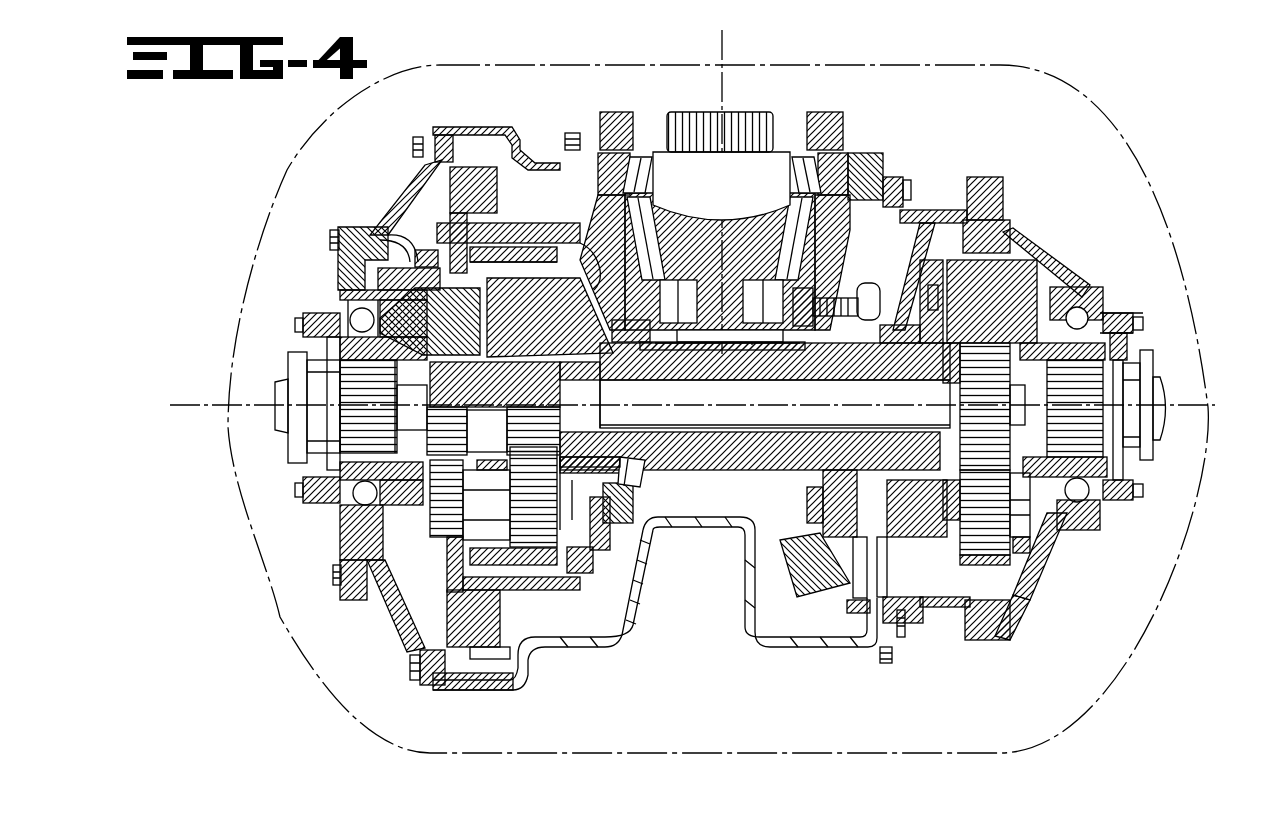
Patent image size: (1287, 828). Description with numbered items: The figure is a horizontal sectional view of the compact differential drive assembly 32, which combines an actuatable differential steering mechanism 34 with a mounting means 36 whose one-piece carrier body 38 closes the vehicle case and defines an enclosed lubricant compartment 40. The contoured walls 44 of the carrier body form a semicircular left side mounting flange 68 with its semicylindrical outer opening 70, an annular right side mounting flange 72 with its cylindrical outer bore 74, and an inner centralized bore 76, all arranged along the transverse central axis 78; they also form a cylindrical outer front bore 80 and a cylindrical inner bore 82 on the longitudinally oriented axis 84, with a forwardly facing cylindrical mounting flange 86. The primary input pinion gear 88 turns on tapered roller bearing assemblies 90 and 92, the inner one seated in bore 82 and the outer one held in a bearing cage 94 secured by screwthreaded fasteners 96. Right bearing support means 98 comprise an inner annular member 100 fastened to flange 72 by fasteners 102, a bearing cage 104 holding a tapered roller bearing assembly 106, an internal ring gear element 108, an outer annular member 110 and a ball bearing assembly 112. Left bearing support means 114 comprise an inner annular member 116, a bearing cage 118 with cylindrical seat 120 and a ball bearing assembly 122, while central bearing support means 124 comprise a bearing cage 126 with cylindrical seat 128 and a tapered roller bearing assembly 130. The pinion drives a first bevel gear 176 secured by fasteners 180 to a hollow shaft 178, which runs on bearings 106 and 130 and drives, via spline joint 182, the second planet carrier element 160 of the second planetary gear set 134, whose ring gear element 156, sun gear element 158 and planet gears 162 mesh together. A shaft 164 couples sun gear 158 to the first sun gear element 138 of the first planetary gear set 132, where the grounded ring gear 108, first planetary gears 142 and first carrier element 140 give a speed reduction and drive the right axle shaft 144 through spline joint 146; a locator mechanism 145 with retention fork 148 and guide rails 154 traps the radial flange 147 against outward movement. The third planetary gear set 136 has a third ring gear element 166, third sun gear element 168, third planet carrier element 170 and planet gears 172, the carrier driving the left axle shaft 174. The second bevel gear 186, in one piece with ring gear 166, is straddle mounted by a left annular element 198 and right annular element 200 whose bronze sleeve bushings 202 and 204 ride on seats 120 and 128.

The differential drive assembly 32 is at (288, 168).
The differential steering mechanism 34 is at (442, 185).
The mounting means 36 is at (500, 122).
The carrier body 38 is at (635, 628).
The enclosed compartment 40 is at (928, 712).
The contoured walls 44 is at (745, 550).
The left side mounting flange 68 is at (418, 680).
The semicylindrical outer opening 70 is at (415, 645).
The right side mounting flange 72 is at (878, 648).
The cylindrical outer bore 74 is at (857, 603).
The inner centralized bore 76 is at (640, 488).
The transverse central axis 78 is at (215, 400).
The cylindrical outer front bore 80 is at (840, 130).
The cylindrical inner bore 82 is at (672, 355).
The longitudinally oriented axis 84 is at (730, 85).
The cylindrical mounting flange 86 is at (880, 160).
The primary input pinion gear 88 is at (685, 190).
The inner tapered roller bearing assembly 90 is at (752, 352).
The outer tapered roller bearing assembly 92 is at (640, 158).
The bearing cage 94 is at (614, 120).
The screwthreaded fasteners 96 is at (568, 138).
The right bearing support means 98 is at (1015, 600).
The inner annular member 100 is at (910, 607).
The screwthreaded fasteners 102 is at (905, 637).
The bearing cage 104 is at (960, 372).
The tapered roller bearing assembly 106 is at (892, 365).
The internal ring gear element 108 is at (1030, 583).
The outer annular member 110 is at (1045, 550).
The ball bearing assembly 112 is at (1070, 530).
The left bearing support means 114 is at (335, 552).
The inner annular member 116 is at (395, 612).
The bearing cage 118 is at (347, 588).
The cylindrical seat 120 is at (360, 522).
The ball bearing assembly 122 is at (355, 493).
The central bearing support means 124 is at (642, 452).
The bearing cage 126 is at (580, 565).
The cylindrical seat 128 is at (580, 573).
The tapered roller bearing assembly 130 is at (640, 462).
The first planetary gear set 132 is at (1010, 250).
The second planetary gear set 134 is at (540, 243).
The third planetary gear set 136 is at (452, 258).
The first sun gear element 138 is at (965, 412).
The first carrier element 140 is at (965, 301).
The first planetary gears 142 is at (975, 563).
The right axle shaft 144 is at (1158, 383).
The locator mechanism 145 is at (1163, 305).
The spline joint 146 is at (320, 372).
The radial flange 147 is at (1165, 423).
The retention fork 148 is at (1125, 468).
The guide rails 154 is at (1130, 302).
The second ring gear element 156 is at (527, 247).
The second sun gear element 158 is at (643, 390).
The second planet carrier element 160 is at (548, 325).
The planet gears 162 is at (520, 565).
The shaft 164 is at (776, 407).
The third ring gear element 166 is at (400, 286).
The third sun gear element 168 is at (493, 429).
The third planet carrier element 170 is at (456, 325).
The planet gears 172 is at (444, 592).
The left axle shaft 174 is at (285, 408).
The first bevel gear 176 is at (790, 570).
The hollow shaft 178 is at (742, 452).
The fasteners 180 is at (867, 283).
The spline joint 182 is at (635, 355).
The second bevel gear 186 is at (483, 660).
The left annular element 198 is at (420, 258).
The right annular element 200 is at (590, 262).
The left sleeve bushing 202 is at (390, 300).
The right sleeve bushing 204 is at (515, 270).